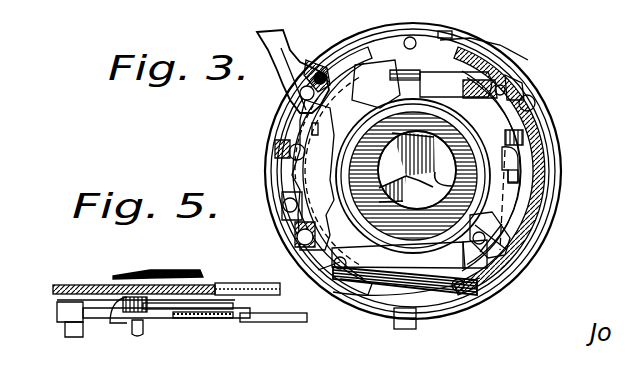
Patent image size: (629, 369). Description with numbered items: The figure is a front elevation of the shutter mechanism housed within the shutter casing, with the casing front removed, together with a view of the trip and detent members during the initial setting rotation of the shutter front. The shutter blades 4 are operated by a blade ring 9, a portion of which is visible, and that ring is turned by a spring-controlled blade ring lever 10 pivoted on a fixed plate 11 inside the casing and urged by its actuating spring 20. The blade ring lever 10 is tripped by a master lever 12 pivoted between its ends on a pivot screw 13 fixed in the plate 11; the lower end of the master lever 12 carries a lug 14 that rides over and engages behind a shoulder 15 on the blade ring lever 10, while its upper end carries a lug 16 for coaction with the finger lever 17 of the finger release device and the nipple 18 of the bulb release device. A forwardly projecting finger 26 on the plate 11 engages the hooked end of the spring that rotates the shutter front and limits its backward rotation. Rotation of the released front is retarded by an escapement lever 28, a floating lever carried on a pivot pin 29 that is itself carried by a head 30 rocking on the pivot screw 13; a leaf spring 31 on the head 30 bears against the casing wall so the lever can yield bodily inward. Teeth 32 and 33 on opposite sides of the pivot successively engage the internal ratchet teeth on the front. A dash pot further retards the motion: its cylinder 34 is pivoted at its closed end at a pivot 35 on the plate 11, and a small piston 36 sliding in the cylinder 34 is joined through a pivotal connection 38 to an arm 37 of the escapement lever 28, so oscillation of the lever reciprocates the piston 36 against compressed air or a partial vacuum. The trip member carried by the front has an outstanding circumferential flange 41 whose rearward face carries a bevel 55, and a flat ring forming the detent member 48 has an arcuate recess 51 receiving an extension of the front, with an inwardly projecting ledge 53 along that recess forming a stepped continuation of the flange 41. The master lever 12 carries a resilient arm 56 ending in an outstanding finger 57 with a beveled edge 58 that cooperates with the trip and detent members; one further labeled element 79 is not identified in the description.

In FIG. 3, the shutter blades 4 is at (433, 158).
In FIG. 3, the blade ring 9 is at (545, 188).
In FIG. 3, the blade ring lever 10 is at (505, 248).
In FIG. 3, the fixed plate 11 is at (520, 205).
In FIG. 3, the master lever 12 is at (483, 78).
In FIG. 5, the master lever 12 is at (282, 322).
In FIG. 3, the pivot screw 13 is at (536, 100).
In FIG. 3, the lug 14 is at (492, 289).
In FIG. 3, the shoulder 15 is at (440, 244).
In FIG. 3, the lug 16 is at (488, 72).
In FIG. 5, the lug 16 is at (80, 327).
In FIG. 3, the finger lever 17 is at (285, 56).
In FIG. 3, the nipple 18 is at (266, 135).
In FIG. 3, the actuating spring 20 is at (528, 232).
In FIG. 3, the finger 26 is at (342, 285).
In FIG. 3, the escapement lever 28 is at (548, 130).
In FIG. 3, the pivot pin 29 is at (553, 145).
In FIG. 3, the head 30 is at (533, 117).
In FIG. 3, the leaf spring 31 is at (460, 82).
In FIG. 3, the tooth 32 is at (552, 108).
In FIG. 3, the tooth 33 is at (556, 170).
In FIG. 3, the cylinder 34 is at (388, 280).
In FIG. 3, the pivot 35 is at (328, 272).
In FIG. 3, the piston 36 is at (446, 300).
In FIG. 3, the arm 37 is at (535, 258).
In FIG. 3, the pivotal connection 38 is at (462, 290).
In FIG. 5, the flange 41 is at (53, 297).
In FIG. 5, the detent member 48 is at (77, 283).
In FIG. 3, the arcuate recess 51 is at (430, 80).
In FIG. 5, the ledge 53 is at (257, 268).
In FIG. 3, the bevel 55 is at (516, 30).
In FIG. 5, the bevel 55 is at (170, 309).
In FIG. 3, the arm 56 is at (503, 88).
In FIG. 5, the arm 56 is at (218, 318).
In FIG. 5, the finger 57 is at (136, 322).
In FIG. 5, the beveled edge 58 is at (120, 312).
In FIG. 3, the anchor block 79 is at (520, 86).